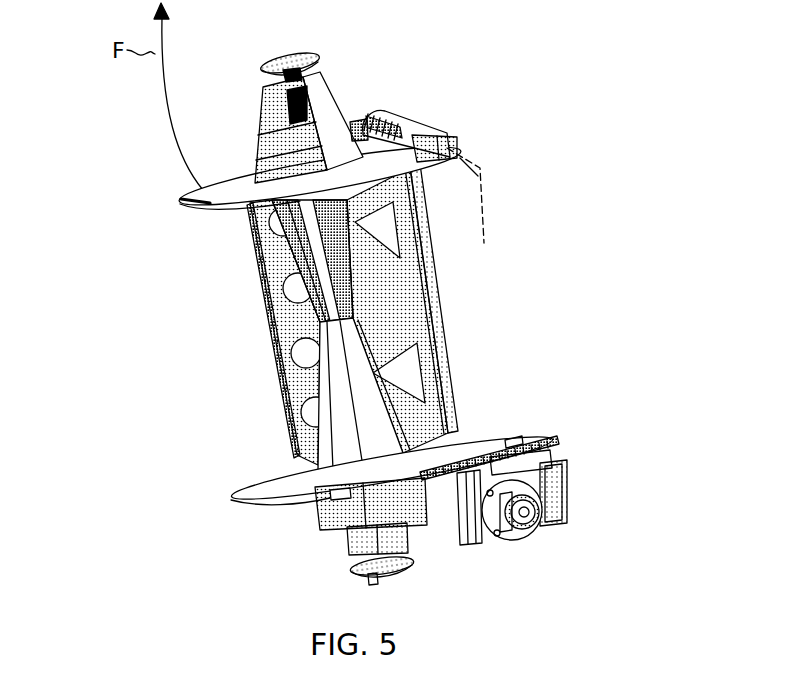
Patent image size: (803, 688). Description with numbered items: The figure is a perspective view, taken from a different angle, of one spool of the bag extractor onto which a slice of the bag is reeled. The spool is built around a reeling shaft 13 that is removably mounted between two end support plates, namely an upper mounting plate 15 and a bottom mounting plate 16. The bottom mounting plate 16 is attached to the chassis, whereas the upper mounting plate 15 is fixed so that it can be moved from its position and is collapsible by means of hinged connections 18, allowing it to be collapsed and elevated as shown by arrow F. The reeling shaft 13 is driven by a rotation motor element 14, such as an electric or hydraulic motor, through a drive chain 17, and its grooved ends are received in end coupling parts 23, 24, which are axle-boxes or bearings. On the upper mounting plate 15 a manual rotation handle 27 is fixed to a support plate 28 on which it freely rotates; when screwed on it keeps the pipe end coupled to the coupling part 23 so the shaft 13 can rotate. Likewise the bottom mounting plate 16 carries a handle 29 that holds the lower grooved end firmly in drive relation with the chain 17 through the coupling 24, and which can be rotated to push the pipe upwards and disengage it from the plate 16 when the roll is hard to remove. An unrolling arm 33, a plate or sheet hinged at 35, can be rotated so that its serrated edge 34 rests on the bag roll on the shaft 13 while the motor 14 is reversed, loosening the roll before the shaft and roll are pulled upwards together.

The reeling shaft 13 is at (312, 328).
The rotation motor element 14 is at (568, 482).
The upper mounting plate 15 is at (179, 199).
The bottom mounting plate 16 is at (258, 487).
The drive chain 17 is at (487, 447).
The hinged connections 18 is at (400, 128).
The end coupling part 23 is at (303, 167).
The end coupling part 24 is at (360, 507).
The manual rotation handle 27 is at (262, 67).
The support plate 28 is at (327, 106).
The handle 29 is at (350, 571).
The unrolling arm 33 is at (272, 262).
The serrated edge 34 is at (280, 385).
The hinge 35 is at (440, 316).